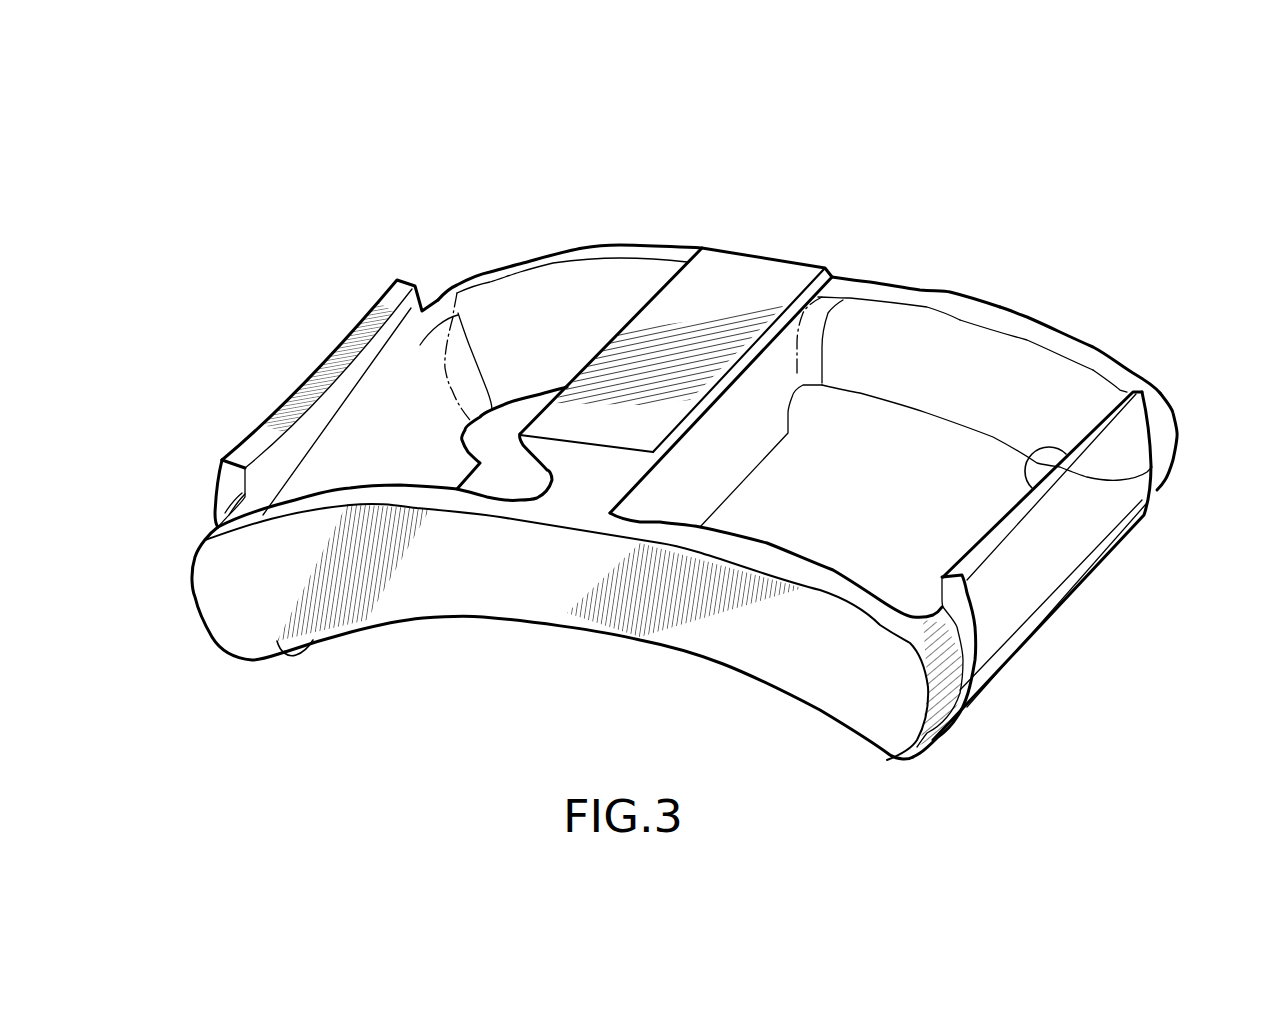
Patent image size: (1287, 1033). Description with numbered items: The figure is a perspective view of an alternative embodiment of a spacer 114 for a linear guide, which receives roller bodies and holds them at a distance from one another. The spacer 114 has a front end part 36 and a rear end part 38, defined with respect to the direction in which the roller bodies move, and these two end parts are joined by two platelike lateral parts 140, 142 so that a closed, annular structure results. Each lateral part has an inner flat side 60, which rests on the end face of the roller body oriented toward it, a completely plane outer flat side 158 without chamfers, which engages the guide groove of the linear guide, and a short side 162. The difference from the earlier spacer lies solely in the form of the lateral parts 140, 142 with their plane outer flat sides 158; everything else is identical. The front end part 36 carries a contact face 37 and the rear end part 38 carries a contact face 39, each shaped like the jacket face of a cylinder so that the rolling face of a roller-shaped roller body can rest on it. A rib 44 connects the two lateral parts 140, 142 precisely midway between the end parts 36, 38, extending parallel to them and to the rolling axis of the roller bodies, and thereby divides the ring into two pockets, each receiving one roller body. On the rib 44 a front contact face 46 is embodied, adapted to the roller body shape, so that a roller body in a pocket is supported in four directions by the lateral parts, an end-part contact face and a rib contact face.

The spacer 114 is at (972, 197).
The front end part 36 is at (1065, 557).
The contact face 37 is at (1110, 472).
The rear end part 38 is at (310, 380).
The contact face 39 is at (413, 390).
The rib 44 is at (715, 275).
The front contact face 46 is at (732, 408).
The inner flat side 60 is at (892, 343).
The lateral part 140 is at (260, 627).
The lateral part 142 is at (1072, 383).
The outer flat side 158 is at (863, 693).
The short side 162 is at (1000, 320).